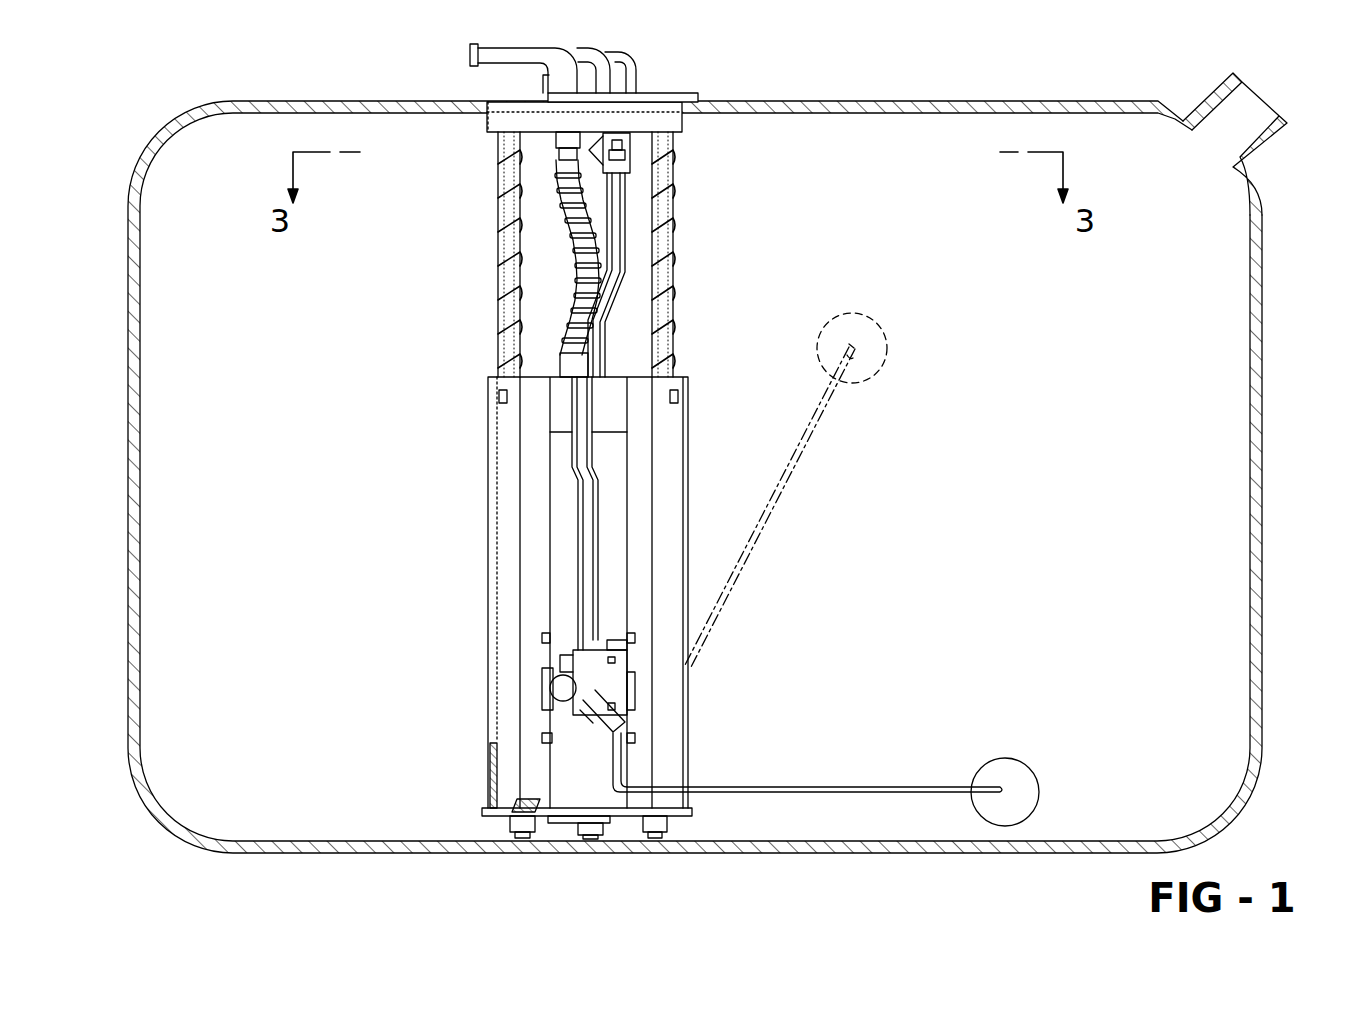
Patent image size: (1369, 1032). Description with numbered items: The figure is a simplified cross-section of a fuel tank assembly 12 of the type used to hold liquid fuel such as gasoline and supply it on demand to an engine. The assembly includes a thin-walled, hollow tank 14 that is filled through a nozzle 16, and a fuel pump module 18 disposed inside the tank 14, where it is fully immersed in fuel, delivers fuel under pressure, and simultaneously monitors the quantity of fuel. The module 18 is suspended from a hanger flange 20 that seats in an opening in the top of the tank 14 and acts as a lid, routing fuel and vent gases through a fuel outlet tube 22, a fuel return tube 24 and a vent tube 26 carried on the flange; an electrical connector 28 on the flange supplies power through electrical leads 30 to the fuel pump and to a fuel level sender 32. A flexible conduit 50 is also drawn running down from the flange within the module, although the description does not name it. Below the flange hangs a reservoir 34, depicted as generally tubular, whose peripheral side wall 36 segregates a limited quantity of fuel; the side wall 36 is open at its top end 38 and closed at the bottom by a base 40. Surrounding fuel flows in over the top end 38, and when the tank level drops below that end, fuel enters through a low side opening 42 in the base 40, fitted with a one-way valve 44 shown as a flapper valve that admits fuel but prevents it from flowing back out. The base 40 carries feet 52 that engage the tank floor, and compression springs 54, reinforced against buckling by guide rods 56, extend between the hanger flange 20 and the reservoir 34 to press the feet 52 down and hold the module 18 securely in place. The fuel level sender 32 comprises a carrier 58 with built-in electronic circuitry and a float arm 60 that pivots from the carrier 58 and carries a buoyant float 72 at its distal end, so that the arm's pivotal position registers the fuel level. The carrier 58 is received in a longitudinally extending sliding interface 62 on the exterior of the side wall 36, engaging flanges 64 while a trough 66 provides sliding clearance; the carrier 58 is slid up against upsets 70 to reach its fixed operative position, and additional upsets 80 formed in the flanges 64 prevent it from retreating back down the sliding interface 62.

The fuel tank assembly 12 is at (183, 70).
The tank 14 is at (903, 101).
The nozzle 16 is at (1254, 135).
The fuel pump module 18 is at (330, 408).
The hanger flange 20 is at (700, 100).
The fuel outlet tube 22 is at (470, 50).
The fuel return tube 24 is at (637, 58).
The vent tube 26 is at (612, 52).
The electrical connector 28 is at (548, 80).
The electrical leads 30 is at (590, 467).
The fuel level sender 32 is at (638, 690).
The reservoir 34 is at (492, 633).
The peripheral side wall 36 is at (688, 577).
The top end 38 is at (688, 377).
The base 40 is at (622, 823).
The low side opening 42 is at (538, 816).
The one-way valve 44 is at (550, 800).
The flexible hose 50 is at (575, 257).
The feet 52 is at (508, 822).
The compression springs 54 is at (502, 193).
The guide rods 56 is at (502, 207).
The carrier 58 is at (567, 733).
The float arm 60 is at (757, 542).
The sliding interface 62 is at (618, 603).
The flanges 64 is at (552, 535).
The trough 66 is at (583, 790).
The upsets 70 is at (545, 637).
The float 72 is at (1000, 758).
The additional upsets 80 is at (575, 735).